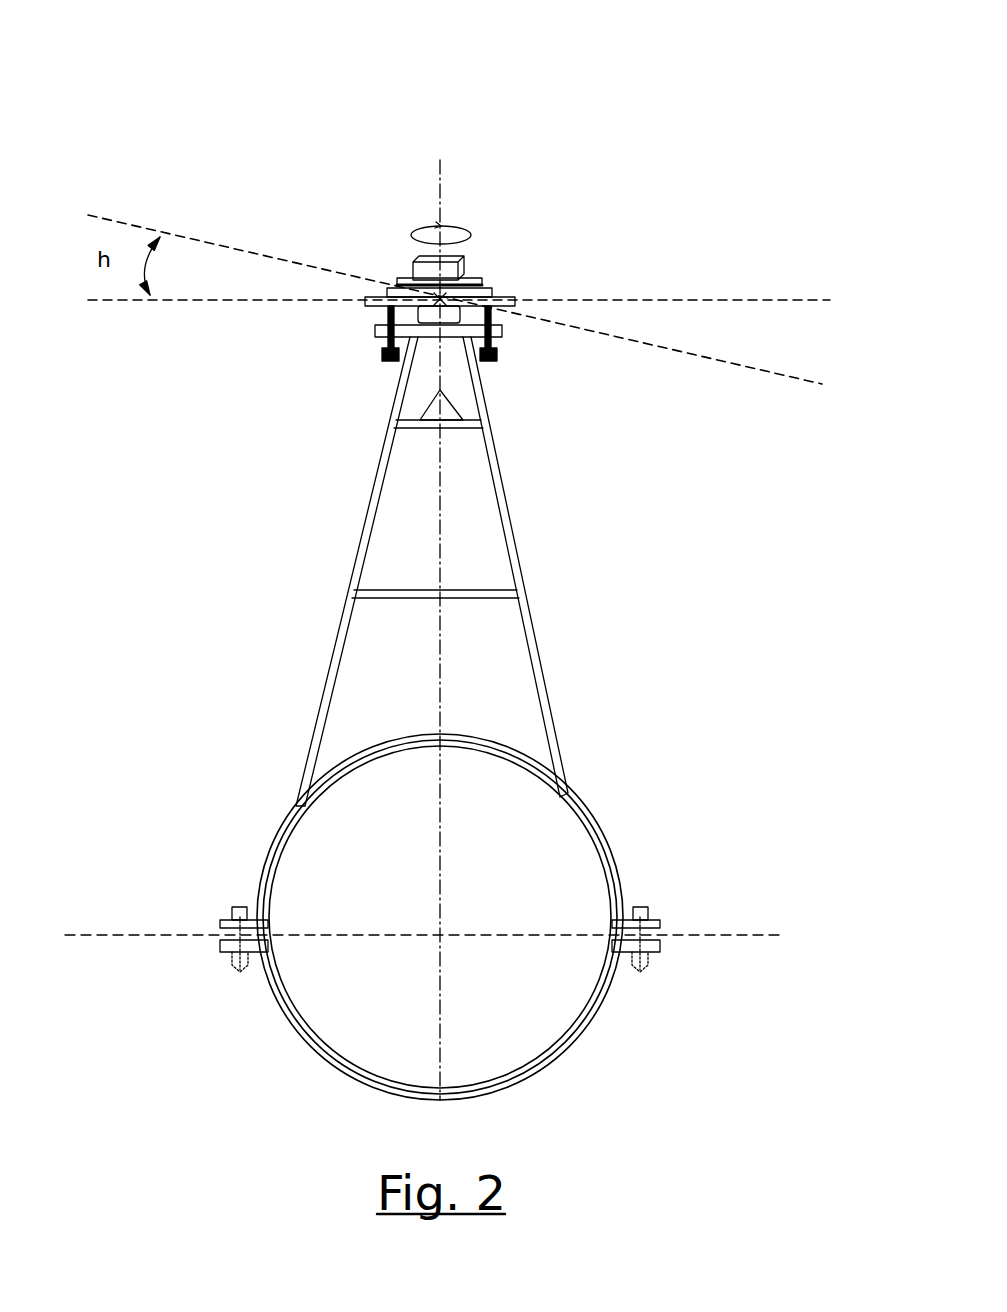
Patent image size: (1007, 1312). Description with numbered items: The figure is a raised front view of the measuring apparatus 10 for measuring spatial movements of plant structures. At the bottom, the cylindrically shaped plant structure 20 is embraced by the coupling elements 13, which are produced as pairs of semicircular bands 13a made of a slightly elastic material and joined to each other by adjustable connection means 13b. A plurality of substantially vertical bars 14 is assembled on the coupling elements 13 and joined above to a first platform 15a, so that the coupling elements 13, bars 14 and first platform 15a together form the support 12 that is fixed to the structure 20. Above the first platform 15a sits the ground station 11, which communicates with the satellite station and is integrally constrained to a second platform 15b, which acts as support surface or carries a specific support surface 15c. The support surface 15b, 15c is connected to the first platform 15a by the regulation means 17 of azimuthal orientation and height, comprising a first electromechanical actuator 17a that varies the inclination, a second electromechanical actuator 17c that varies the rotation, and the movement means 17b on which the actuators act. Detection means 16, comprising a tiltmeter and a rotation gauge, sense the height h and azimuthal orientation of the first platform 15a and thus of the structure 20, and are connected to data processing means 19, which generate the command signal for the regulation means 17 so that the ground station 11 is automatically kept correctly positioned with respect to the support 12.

The measuring apparatus 10 is at (223, 110).
The ground station 11 is at (403, 248).
The support 12 is at (588, 511).
The coupling elements 13 is at (557, 1068).
The semicircular bands 13a is at (607, 838).
The adjustable connection means 13b is at (232, 908).
The vertical bars 14 is at (376, 482).
The first platform 15a is at (483, 360).
The second platform 15b is at (510, 298).
The support surface 15c is at (495, 290).
The detection means 16 is at (468, 333).
The regulation means 17 is at (250, 312).
The first electromechanical actuator 17a is at (380, 358).
The movement means 17b is at (386, 313).
The second electromechanical actuator 17c is at (437, 297).
The data processing means 19 is at (455, 411).
The plant structure 20 is at (327, 870).